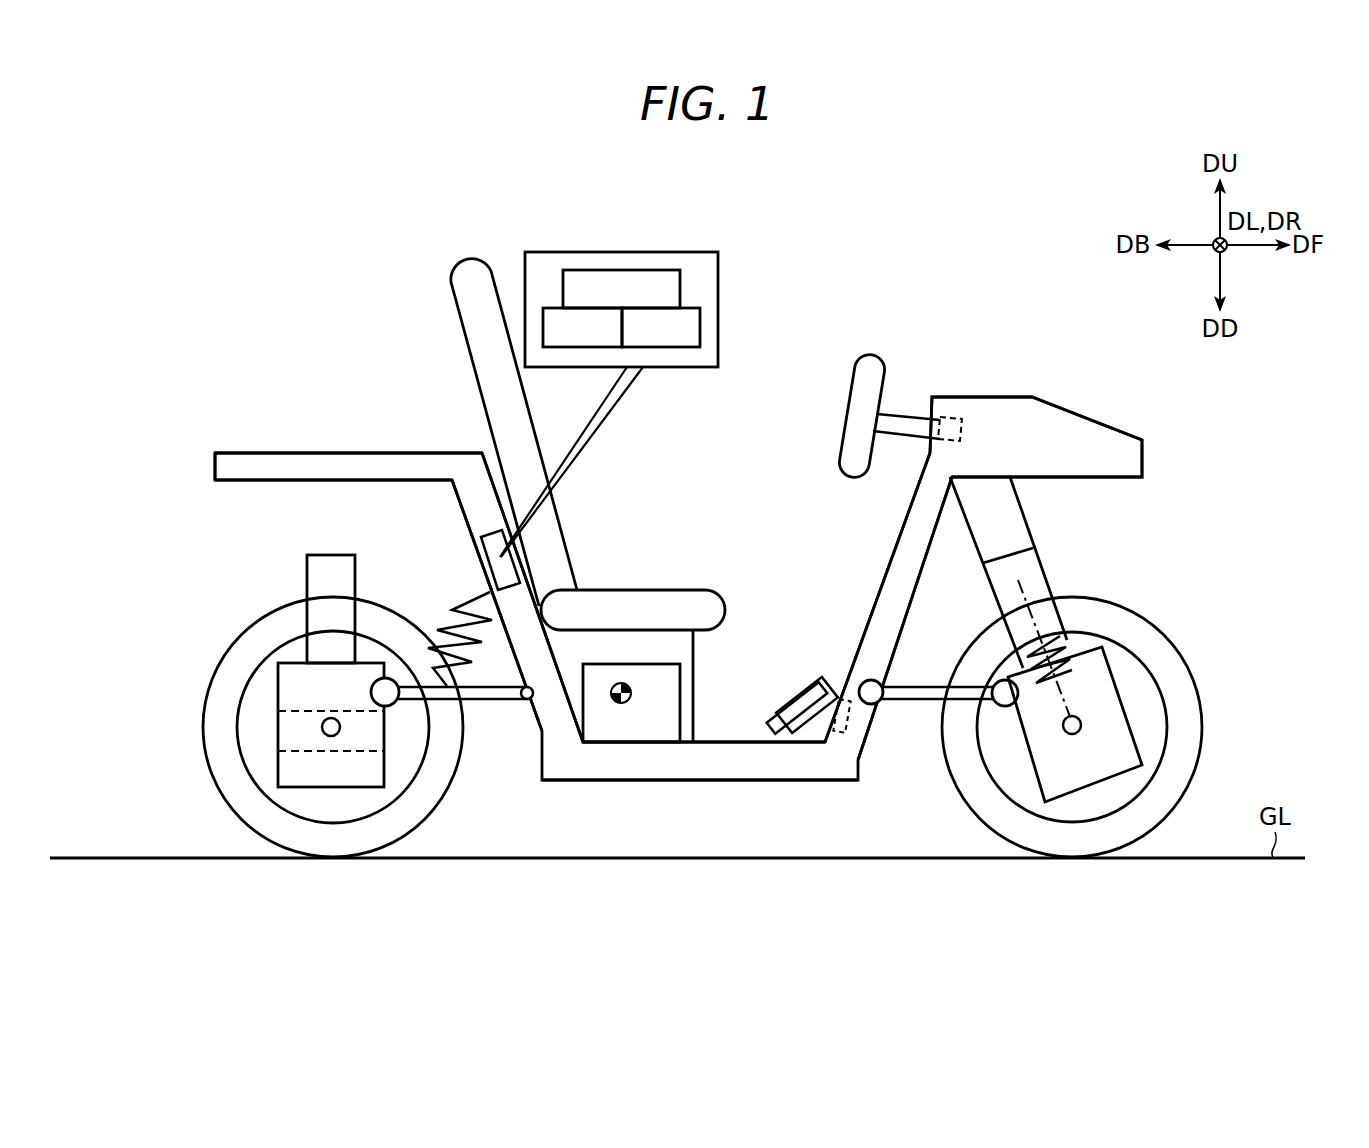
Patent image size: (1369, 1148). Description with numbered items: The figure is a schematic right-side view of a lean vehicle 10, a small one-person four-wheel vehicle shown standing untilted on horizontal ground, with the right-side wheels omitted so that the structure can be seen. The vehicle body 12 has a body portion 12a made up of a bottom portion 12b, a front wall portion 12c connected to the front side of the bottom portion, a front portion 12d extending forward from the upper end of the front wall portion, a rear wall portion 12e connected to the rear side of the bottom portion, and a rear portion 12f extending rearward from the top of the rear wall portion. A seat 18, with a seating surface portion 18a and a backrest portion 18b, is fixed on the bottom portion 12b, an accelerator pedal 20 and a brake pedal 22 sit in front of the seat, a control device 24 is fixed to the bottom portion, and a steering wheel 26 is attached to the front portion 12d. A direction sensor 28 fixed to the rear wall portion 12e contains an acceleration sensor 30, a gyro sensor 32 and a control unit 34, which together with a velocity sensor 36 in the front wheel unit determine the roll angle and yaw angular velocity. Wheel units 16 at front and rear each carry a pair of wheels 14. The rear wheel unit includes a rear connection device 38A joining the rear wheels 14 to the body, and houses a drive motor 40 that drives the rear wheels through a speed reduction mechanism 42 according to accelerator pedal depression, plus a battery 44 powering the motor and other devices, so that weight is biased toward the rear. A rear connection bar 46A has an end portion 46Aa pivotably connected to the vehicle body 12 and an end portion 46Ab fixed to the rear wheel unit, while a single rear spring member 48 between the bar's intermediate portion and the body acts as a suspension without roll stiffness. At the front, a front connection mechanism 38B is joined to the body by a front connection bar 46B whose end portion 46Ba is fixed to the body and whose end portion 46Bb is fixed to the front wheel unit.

The lean vehicle 10 is at (828, 268).
The vehicle body 12 is at (678, 585).
The body portion 12a is at (377, 448).
The bottom portion 12b is at (687, 765).
The front wall portion 12c is at (890, 588).
The front portion 12d is at (1066, 422).
The rear wall portion 12e is at (480, 519).
The rear portion 12f is at (252, 466).
The wheels 14 is at (205, 720).
The wheel units 16 is at (296, 658).
The seat 18 is at (588, 469).
The seating surface portion 18a is at (631, 600).
The backrest portion 18b is at (548, 540).
The accelerator pedal 20 is at (818, 702).
The brake pedal 22 is at (780, 706).
The control device 24 is at (612, 733).
The steering wheel 26 is at (855, 408).
The direction sensor 28 is at (635, 376).
The acceleration sensor 30 is at (560, 335).
The gyro sensor 32 is at (690, 323).
The control unit 34 is at (621, 282).
The velocity sensor 36 is at (1072, 736).
The rear connection device 38A is at (272, 678).
The front connection mechanism 38B is at (1114, 766).
The drive motor 40 is at (296, 768).
The speed reduction mechanism 42 is at (296, 733).
The battery 44 is at (331, 565).
The rear connection bar 46A is at (483, 699).
The end portion 46Aa is at (528, 700).
The end portion 46Ab is at (392, 705).
The front connection bar 46B is at (930, 686).
The end portion 46Ba is at (866, 682).
The end portion 46Bb is at (996, 683).
The rear spring member 48 is at (440, 628).